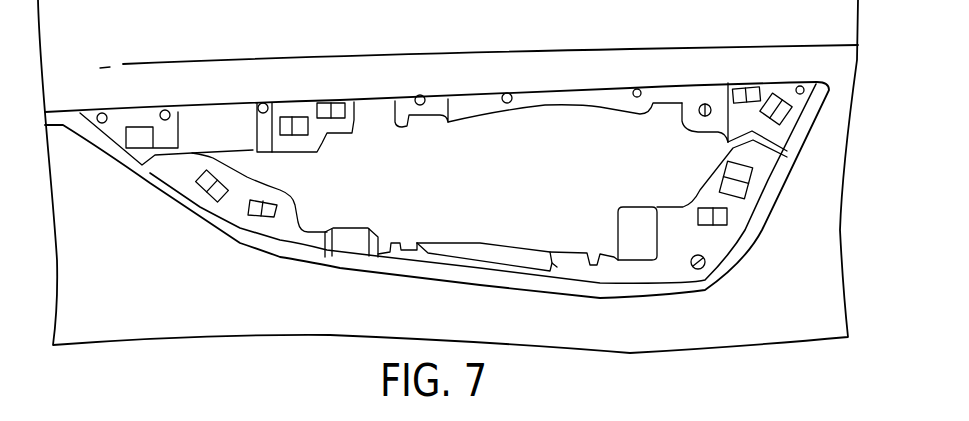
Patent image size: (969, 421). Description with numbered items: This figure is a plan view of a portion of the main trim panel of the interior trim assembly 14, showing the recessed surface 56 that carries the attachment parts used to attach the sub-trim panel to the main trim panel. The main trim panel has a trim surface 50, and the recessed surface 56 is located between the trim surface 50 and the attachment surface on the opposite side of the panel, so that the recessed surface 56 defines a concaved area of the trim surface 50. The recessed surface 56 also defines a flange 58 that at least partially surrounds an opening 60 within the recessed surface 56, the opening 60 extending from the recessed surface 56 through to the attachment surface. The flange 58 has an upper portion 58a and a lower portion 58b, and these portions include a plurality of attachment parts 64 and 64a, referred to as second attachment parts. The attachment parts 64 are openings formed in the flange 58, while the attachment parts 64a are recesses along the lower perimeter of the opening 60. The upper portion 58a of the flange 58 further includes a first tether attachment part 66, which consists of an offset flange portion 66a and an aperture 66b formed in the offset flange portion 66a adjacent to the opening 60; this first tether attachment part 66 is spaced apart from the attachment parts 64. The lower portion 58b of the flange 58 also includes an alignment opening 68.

The interior trim assembly 14 is at (160, 370).
The trim surface 50 is at (786, 313).
The recessed surface 56 is at (680, 230).
The flange 58 is at (313, 232).
The upper portion 58a is at (472, 106).
The lower portion 58b is at (290, 210).
The opening 60 is at (510, 247).
The attachment parts 64 is at (252, 207).
The attachment parts 64a is at (400, 243).
The first tether attachment part 66 is at (676, 122).
The offset flange portion 66a is at (695, 123).
The aperture 66b is at (704, 103).
The alignment opening 68 is at (692, 264).